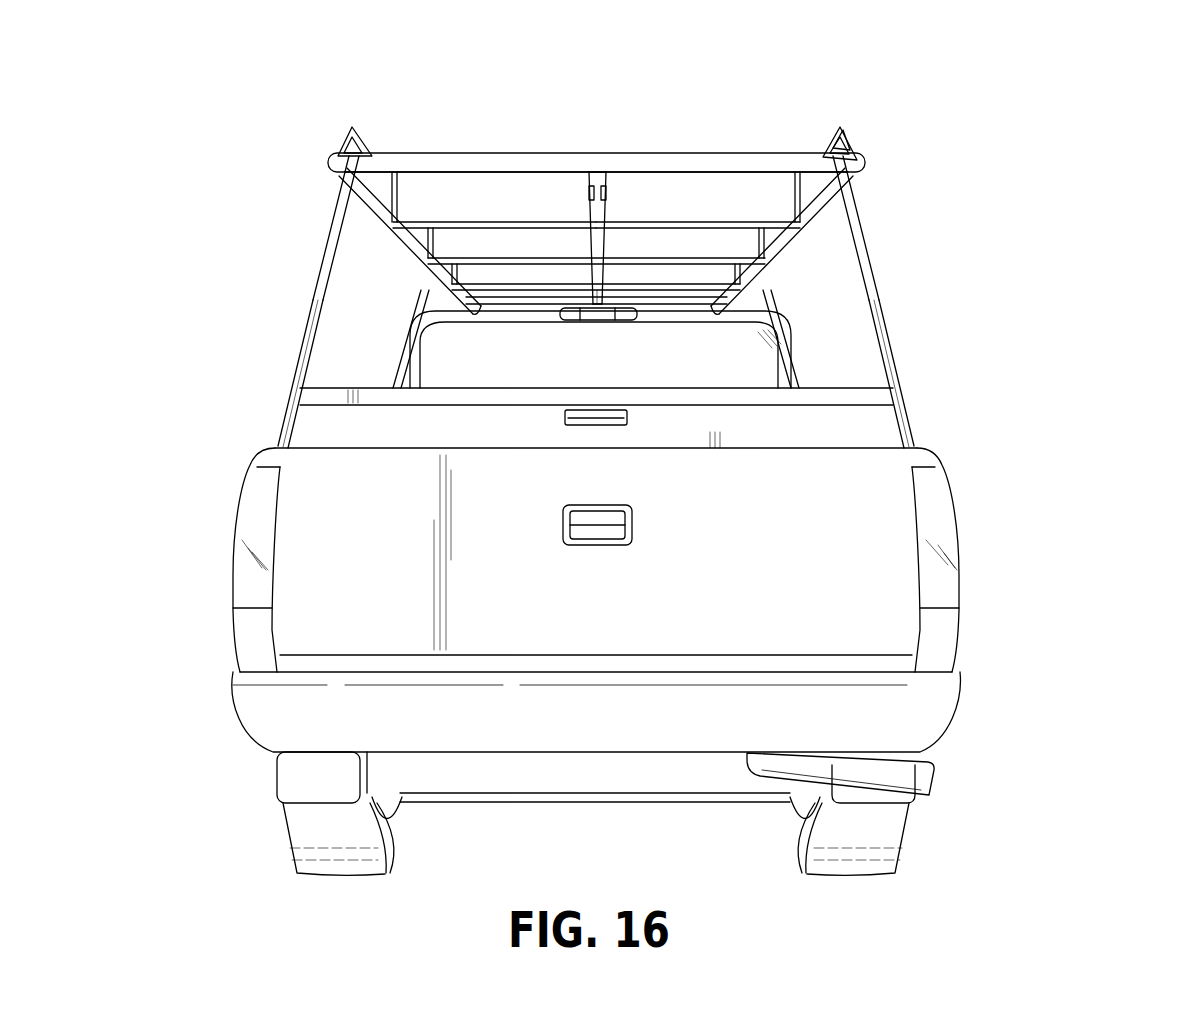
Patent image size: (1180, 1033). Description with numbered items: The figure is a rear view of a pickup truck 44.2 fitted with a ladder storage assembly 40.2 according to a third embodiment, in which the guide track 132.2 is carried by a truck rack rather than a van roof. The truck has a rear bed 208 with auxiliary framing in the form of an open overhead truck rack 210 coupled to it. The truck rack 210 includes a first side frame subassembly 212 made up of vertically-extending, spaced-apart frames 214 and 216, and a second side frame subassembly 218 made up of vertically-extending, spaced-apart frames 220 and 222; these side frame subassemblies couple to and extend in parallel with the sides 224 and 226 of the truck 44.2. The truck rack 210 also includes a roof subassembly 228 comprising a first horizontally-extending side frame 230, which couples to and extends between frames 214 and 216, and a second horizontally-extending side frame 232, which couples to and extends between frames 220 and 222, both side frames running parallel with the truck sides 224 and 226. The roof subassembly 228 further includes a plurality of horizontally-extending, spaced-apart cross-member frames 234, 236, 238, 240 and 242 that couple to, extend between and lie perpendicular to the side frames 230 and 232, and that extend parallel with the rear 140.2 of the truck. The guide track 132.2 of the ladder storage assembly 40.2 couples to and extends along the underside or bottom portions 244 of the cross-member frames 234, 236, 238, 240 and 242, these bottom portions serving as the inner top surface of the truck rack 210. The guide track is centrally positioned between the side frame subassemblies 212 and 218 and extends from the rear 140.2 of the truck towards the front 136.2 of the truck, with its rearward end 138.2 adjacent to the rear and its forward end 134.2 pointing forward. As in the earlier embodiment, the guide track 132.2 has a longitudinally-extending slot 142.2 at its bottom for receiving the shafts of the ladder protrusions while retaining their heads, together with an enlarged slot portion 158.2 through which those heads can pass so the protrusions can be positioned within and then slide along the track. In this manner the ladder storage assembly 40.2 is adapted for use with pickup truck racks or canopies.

The ladder storage assembly 40.2 is at (541, 104).
The pickup truck 44.2 is at (917, 125).
The guide track 132.2 is at (609, 170).
The forward end of guide track 134.2 is at (600, 303).
The front of truck 136.2 is at (388, 376).
The rearward end of guide track 138.2 is at (597, 153).
The rear of truck 140.2 is at (990, 631).
The slot of guide track 142.2 is at (595, 286).
The enlarged slot portion 158.2 is at (593, 200).
The rear bed 208 is at (297, 628).
The truck rack 210 is at (863, 228).
The first side frame subassembly 212 is at (305, 258).
The frame 214 is at (308, 333).
The frame 216 is at (420, 292).
The second side frame subassembly 218 is at (885, 303).
The frame 220 is at (878, 357).
The frame 222 is at (780, 310).
The side of truck 224 is at (233, 572).
The side of truck 226 is at (958, 523).
The roof subassembly 228 is at (857, 128).
The first horizontally-extending side frame 230 is at (378, 212).
The second horizontally-extending side frame 232 is at (818, 210).
The cross-member frame 234 is at (397, 152).
The cross-member frame 236 is at (708, 227).
The cross-member frame 238 is at (433, 253).
The cross-member frame 240 is at (507, 296).
The cross-member frame 242 is at (693, 309).
The bottom portions of frames 244 is at (470, 227).